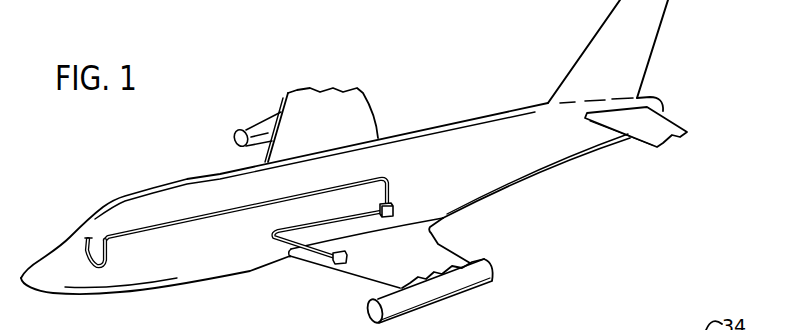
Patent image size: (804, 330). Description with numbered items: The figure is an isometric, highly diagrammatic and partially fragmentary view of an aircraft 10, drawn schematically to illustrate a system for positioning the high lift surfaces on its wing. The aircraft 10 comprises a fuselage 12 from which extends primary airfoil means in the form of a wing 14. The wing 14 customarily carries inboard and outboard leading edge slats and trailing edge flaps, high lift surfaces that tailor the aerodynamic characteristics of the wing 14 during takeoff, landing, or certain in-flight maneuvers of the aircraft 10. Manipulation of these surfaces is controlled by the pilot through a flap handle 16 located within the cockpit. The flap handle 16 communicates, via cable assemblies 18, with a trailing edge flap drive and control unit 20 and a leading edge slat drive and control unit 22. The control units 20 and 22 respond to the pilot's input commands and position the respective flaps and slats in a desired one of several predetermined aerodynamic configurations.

The aircraft 10 is at (159, 167).
The fuselage 12 is at (562, 164).
The wing 14 is at (442, 239).
The flap handle 16 is at (84, 255).
The cable assemblies 18 is at (195, 221).
The trailing edge flap drive and control unit 20 is at (398, 204).
The leading edge slat drive and control unit 22 is at (354, 252).